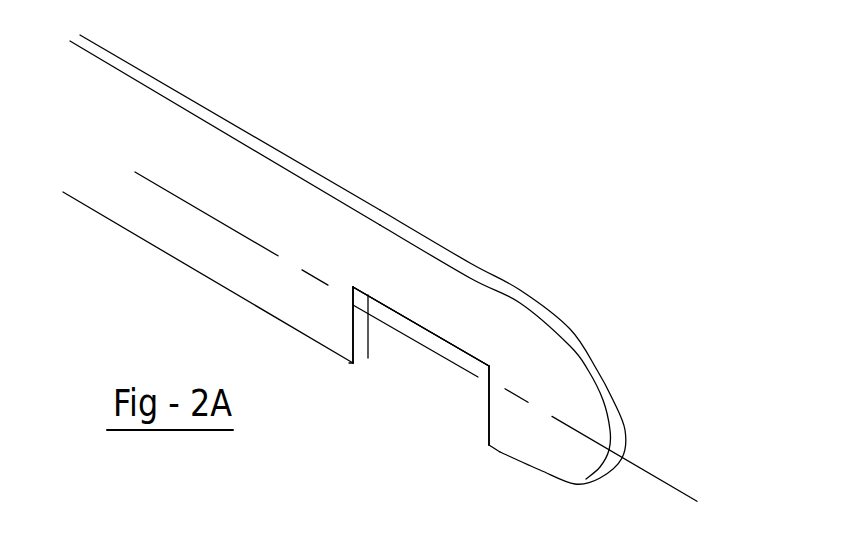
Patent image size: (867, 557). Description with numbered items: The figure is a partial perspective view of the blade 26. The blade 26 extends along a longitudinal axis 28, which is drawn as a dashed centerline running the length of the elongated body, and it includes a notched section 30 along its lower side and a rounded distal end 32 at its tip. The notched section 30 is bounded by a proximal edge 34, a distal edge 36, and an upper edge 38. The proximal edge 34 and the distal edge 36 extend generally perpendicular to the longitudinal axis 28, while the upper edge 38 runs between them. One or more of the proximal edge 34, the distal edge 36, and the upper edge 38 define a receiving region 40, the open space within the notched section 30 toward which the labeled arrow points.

The blade 26 is at (583, 333).
The longitudinal axis 28 is at (263, 247).
The notched section 30 is at (433, 398).
The receiving region 40 is at (433, 398).
The distal end 32 is at (583, 405).
The proximal edge 34 is at (361, 347).
The distal edge 36 is at (490, 408).
The upper edge 38 is at (409, 320).